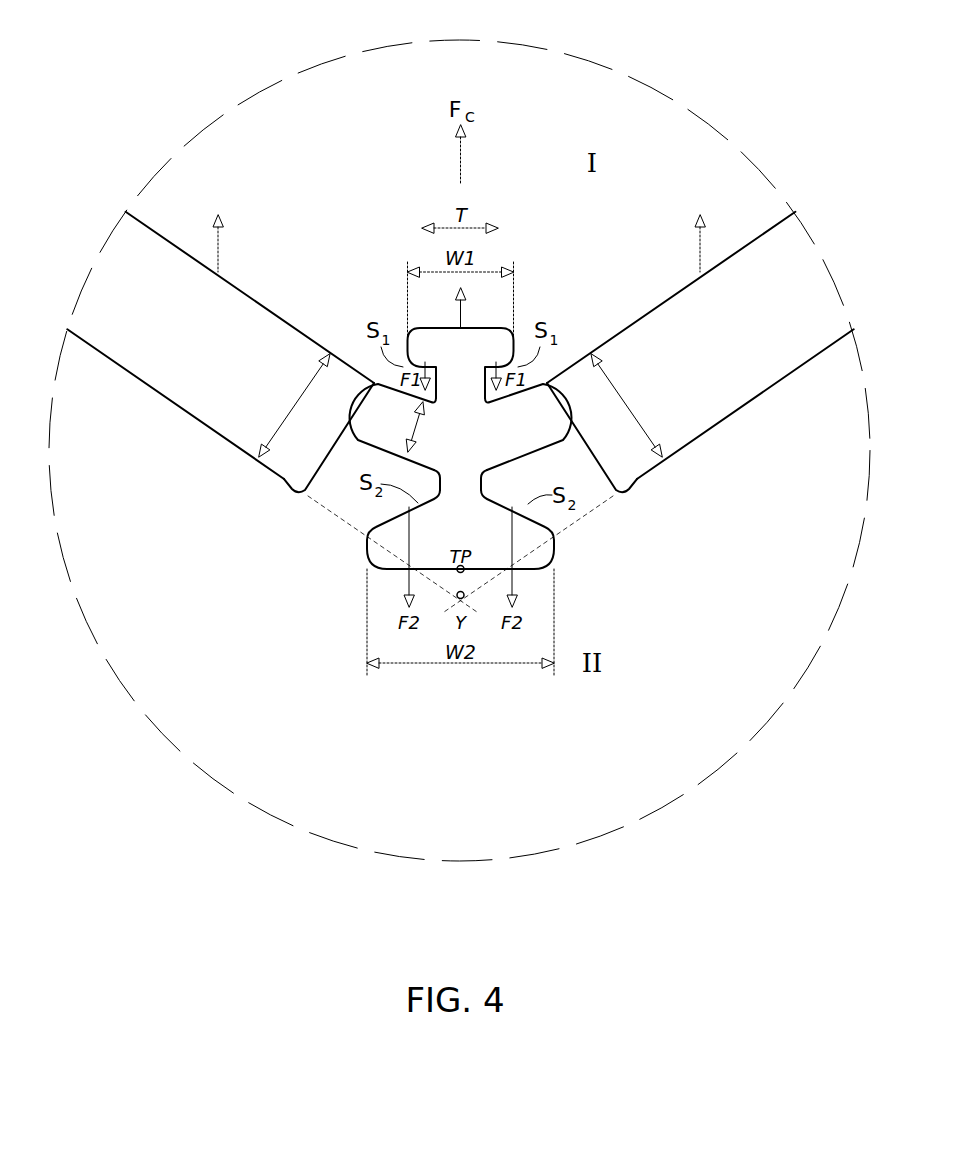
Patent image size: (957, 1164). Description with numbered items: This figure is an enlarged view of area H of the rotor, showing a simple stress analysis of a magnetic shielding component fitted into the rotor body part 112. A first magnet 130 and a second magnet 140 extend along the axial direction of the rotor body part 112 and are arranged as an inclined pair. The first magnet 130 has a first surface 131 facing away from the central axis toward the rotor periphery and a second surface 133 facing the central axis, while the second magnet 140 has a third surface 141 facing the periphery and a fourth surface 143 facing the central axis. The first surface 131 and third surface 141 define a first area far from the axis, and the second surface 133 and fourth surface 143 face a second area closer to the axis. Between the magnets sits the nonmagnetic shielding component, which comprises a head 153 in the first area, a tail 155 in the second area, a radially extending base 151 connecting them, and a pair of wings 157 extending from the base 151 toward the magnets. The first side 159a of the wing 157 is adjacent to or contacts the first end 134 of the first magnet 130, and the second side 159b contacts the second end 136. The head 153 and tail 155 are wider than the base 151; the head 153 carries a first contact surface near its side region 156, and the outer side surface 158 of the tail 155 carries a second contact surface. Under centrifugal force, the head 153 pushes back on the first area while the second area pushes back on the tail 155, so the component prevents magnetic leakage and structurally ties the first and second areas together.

The rotor body part 112 is at (459, 435).
The area H is at (463, 39).
The first magnet 130 is at (220, 369).
The first surface 131 is at (248, 294).
The second surface 133 is at (176, 407).
The first end 134 is at (350, 434).
The second magnet 140 is at (700, 369).
The third surface 141 is at (673, 294).
The fourth surface 143 is at (745, 407).
The second end 136 is at (571, 434).
The base 151 is at (461, 439).
The head 153 is at (491, 348).
The tail 155 is at (499, 536).
The upper side surface 156 is at (505, 331).
The wings 157 is at (490, 445).
The outer side surface 158 is at (556, 540).
The first side 159a is at (352, 404).
The second side 159b is at (558, 411).